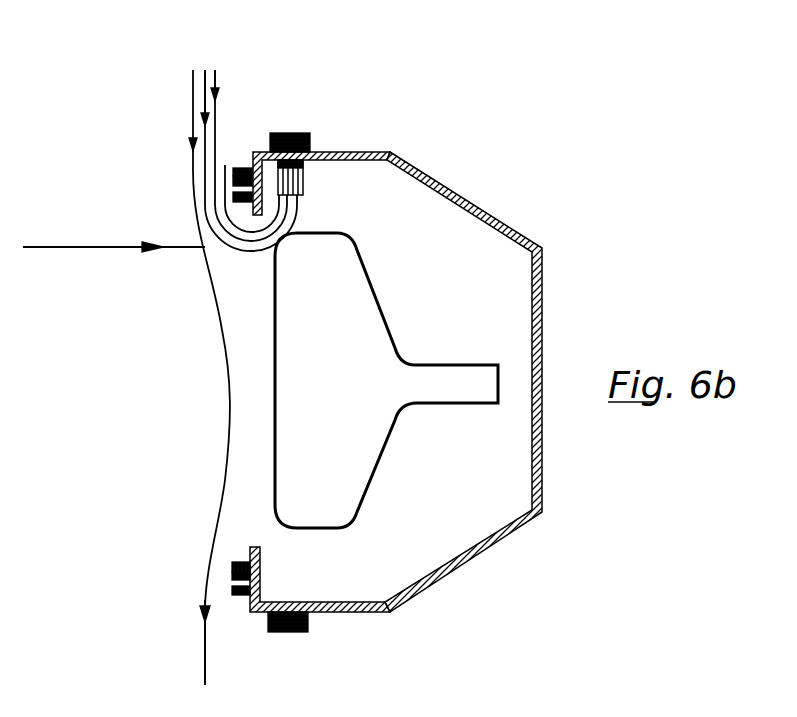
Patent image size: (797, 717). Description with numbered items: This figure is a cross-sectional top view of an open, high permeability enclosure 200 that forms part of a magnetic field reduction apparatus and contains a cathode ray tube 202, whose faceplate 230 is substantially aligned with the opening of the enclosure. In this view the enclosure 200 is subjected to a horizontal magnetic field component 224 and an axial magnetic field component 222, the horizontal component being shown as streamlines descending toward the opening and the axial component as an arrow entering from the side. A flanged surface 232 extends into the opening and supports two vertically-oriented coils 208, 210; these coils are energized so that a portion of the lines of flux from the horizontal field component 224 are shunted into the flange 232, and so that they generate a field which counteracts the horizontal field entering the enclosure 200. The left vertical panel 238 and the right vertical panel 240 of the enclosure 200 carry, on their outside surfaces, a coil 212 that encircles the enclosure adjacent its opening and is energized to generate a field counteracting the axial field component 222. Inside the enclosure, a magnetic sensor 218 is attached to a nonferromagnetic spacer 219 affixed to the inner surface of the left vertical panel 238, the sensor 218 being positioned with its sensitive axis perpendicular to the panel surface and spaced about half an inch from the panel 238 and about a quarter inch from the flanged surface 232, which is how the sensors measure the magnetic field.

The open enclosure 200 is at (460, 197).
The cathode ray tube 202 is at (373, 297).
The vertically-oriented coil 208 is at (228, 168).
The vertically-oriented coil 210 is at (230, 600).
The coil 212 is at (302, 133).
The magnetic sensor 218 is at (303, 190).
The nonferromagnetic spacer 219 is at (303, 165).
The axial magnetic field component 222 is at (90, 245).
The horizontal magnetic field component 224 is at (222, 66).
The faceplate 230 is at (272, 295).
The flanged surface 232 is at (243, 166).
The left vertical panel 238 is at (362, 152).
The right vertical panel 240 is at (368, 613).